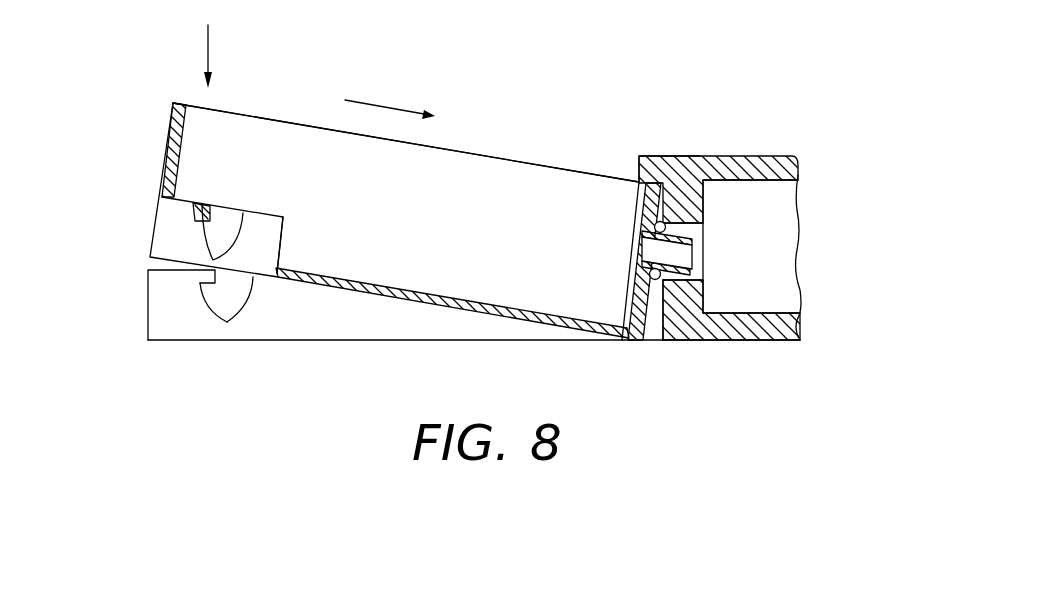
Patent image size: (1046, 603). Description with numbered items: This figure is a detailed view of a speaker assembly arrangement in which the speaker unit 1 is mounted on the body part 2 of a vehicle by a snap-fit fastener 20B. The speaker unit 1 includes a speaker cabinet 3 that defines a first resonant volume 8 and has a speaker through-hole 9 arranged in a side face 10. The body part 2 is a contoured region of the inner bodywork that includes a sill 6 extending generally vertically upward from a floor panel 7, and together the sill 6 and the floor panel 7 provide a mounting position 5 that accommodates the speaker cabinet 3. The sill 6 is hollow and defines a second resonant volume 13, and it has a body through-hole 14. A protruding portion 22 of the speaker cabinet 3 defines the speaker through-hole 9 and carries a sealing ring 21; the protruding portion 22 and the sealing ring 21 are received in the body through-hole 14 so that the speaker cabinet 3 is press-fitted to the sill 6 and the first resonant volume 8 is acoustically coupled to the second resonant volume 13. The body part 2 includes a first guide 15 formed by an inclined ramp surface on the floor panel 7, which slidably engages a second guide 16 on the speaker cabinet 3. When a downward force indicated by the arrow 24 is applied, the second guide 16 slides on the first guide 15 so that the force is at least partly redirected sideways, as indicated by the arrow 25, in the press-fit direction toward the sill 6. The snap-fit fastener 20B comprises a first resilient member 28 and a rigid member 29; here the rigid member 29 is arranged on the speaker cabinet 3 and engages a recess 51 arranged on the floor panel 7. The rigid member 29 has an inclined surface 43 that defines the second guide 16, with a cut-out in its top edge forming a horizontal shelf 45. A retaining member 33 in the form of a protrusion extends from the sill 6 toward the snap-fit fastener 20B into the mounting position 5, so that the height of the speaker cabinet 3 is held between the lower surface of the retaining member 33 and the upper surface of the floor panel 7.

The speaker unit 1 is at (247, 111).
The body part 2 is at (702, 148).
The speaker cabinet 3 is at (165, 137).
The mounting position 5 is at (328, 304).
The sill 6 is at (800, 177).
The floor panel 7 is at (495, 378).
The first resonant volume 8 is at (447, 174).
The speaker through-hole 9 is at (642, 250).
The side face 10 is at (650, 313).
The second resonant volume 13 is at (757, 190).
The body through-hole 14 is at (704, 232).
The first guide 15 is at (240, 315).
The second guide 16 is at (197, 225).
The snap-fit fastener 20B is at (138, 273).
The sealing ring 21 is at (648, 181).
The protruding portion 22 is at (706, 328).
The arrow indicating downward force 24 is at (208, 38).
The arrow indicating sideways direction 25 is at (383, 103).
The first resilient member 28 is at (148, 320).
The rigid member 29 is at (243, 222).
The retaining member 33 is at (658, 155).
The inclined surface 43 is at (197, 237).
The horizontal shelf 45 is at (200, 220).
The recess 51 is at (213, 311).